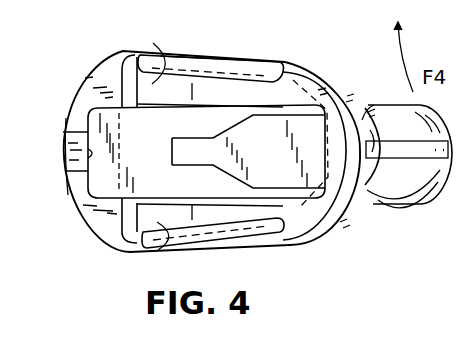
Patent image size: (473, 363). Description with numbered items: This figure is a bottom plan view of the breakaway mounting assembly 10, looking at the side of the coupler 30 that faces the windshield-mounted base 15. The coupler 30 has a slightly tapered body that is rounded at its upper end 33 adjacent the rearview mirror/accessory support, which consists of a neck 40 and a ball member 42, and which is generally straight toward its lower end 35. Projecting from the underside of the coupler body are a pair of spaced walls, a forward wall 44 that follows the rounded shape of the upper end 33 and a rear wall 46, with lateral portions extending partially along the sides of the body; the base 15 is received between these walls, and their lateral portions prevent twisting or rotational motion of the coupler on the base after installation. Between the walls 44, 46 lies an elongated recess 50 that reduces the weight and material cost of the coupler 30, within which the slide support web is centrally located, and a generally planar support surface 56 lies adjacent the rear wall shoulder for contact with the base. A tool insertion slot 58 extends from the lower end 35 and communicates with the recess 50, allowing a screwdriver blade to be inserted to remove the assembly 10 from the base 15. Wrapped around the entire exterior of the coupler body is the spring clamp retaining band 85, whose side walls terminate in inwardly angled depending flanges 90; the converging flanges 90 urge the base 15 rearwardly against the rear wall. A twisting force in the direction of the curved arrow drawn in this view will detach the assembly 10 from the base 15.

The breakaway mounting assembly 10 is at (341, 50).
The base 15 is at (97, 182).
The coupler 30 is at (98, 56).
The upper end 33 is at (365, 203).
The lower end 35 is at (80, 220).
The neck 40 is at (372, 106).
The ball member 42 is at (430, 195).
The wall 44 is at (345, 210).
The rear wall 46 is at (85, 97).
The elongated recess 50 is at (88, 153).
The support surface 56 is at (170, 146).
The tool insertion slot 58 is at (63, 133).
The spring clamp retaining band 85 is at (223, 53).
The depending flange 90 is at (266, 62).